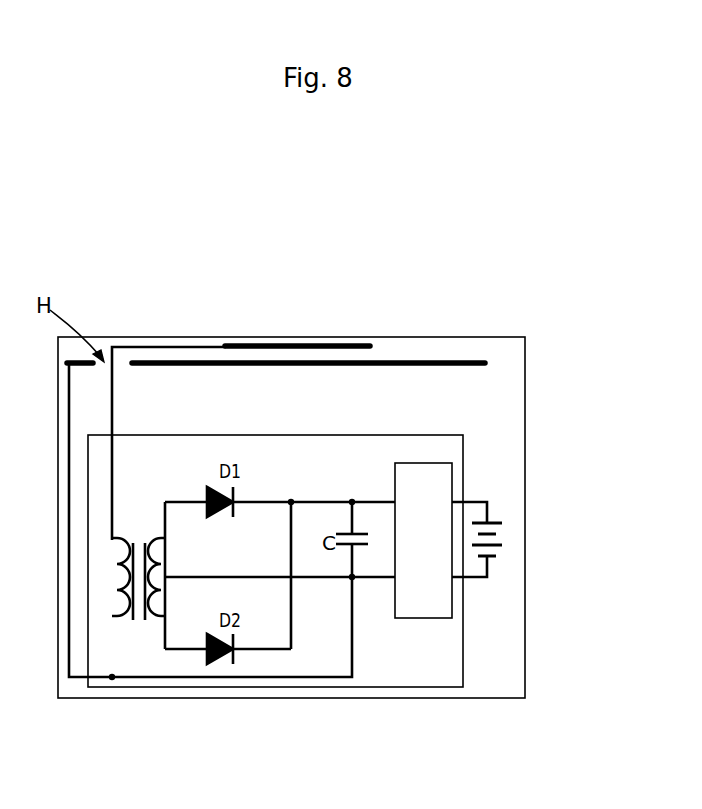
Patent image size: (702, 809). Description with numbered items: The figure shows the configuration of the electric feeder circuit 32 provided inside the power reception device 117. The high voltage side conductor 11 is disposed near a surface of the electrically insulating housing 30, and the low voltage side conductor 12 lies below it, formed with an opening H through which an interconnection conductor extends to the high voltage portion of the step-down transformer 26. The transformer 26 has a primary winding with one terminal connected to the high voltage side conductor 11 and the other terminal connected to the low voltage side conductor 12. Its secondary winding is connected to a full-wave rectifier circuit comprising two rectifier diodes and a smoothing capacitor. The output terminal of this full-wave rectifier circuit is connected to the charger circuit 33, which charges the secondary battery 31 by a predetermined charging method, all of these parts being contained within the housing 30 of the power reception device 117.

The power reception device 117 is at (534, 251).
The electrically insulating housing 30 is at (525, 337).
The high voltage side conductor 11 is at (309, 347).
The low voltage side conductor 12 is at (461, 361).
The electric feeder circuit 32 is at (297, 435).
The step-down transformer 26 is at (139, 537).
The charger circuit 33 is at (420, 463).
The secondary battery 31 is at (504, 538).